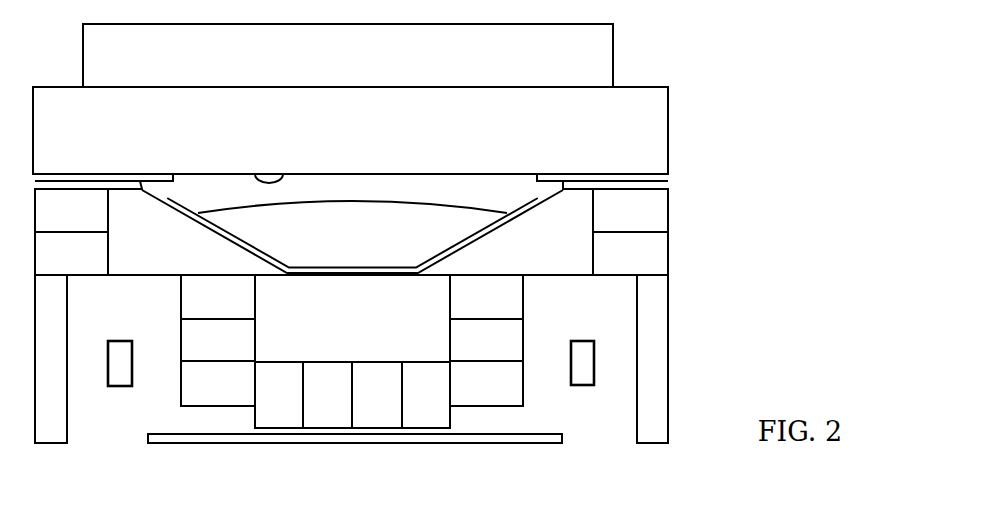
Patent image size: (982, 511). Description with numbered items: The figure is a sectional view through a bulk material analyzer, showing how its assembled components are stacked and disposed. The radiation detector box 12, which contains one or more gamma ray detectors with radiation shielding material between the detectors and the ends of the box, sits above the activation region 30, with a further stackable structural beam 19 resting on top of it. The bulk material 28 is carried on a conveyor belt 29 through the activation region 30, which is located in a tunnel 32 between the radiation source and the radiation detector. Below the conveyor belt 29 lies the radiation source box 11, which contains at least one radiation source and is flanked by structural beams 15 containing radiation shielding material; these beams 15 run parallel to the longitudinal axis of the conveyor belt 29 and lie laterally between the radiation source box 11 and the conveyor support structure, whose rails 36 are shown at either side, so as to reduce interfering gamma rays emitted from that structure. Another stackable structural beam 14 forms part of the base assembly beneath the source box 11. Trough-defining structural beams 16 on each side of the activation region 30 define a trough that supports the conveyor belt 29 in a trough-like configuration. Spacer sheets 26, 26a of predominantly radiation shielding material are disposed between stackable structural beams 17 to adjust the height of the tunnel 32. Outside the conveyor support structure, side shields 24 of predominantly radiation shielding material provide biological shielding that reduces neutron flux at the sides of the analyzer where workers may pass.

The radiation source box 11 is at (339, 331).
The radiation detector box 12 is at (668, 116).
The stackable structural beam 14 is at (285, 428).
The structural beam containing radiation shielding material 15 is at (181, 380).
The trough-defining structural beam 16 is at (142, 247).
The stackable structural beam 17 is at (668, 212).
The stackable structural beam 19 is at (613, 50).
The side shield 24 is at (668, 418).
The spacer sheet 26 is at (668, 184).
The spacer sheet 26a is at (626, 174).
The bulk material 28 is at (360, 244).
The conveyor belt 29 is at (493, 231).
The activation region 30 is at (360, 199).
The tunnel 32 is at (283, 173).
The rail 36 is at (122, 338).